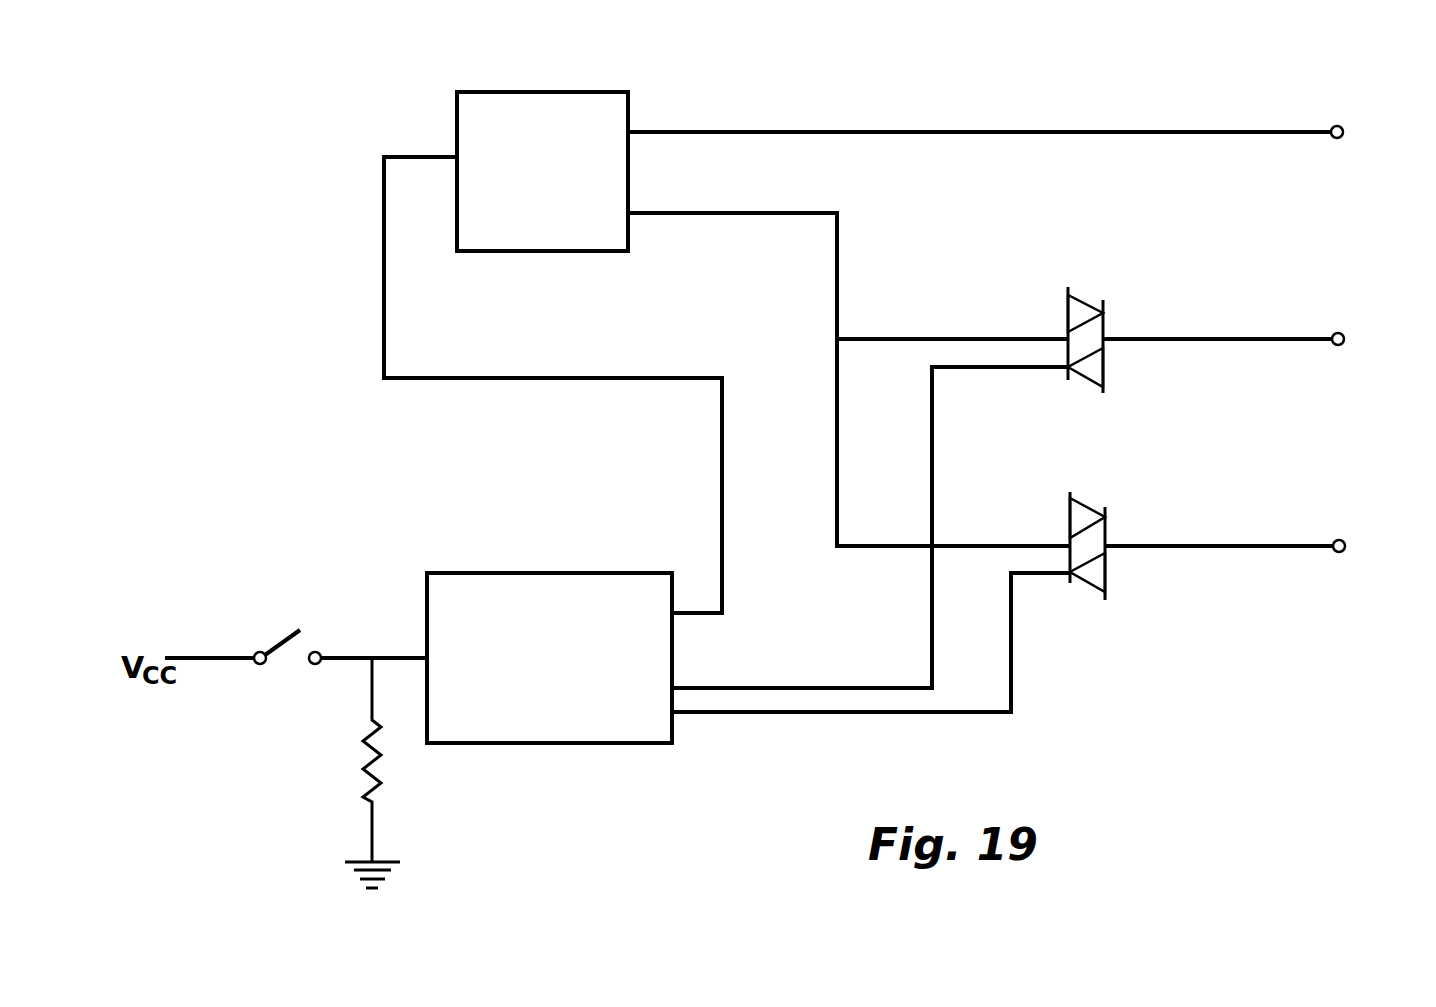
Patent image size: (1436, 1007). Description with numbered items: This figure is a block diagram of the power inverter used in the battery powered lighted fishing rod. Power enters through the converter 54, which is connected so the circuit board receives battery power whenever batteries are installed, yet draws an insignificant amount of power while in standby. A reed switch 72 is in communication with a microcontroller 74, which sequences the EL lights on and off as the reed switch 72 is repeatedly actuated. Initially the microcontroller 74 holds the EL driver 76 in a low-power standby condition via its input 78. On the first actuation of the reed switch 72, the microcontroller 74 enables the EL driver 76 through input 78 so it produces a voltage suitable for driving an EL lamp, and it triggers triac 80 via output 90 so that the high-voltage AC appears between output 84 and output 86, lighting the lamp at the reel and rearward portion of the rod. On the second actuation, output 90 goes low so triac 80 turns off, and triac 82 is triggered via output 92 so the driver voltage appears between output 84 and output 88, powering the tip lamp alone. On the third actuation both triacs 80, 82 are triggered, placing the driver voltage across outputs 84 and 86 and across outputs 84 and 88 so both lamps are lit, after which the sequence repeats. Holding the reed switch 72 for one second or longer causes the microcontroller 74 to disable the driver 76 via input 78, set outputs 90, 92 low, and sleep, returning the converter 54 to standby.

The converter 54 is at (992, 116).
The reed switch 72 is at (287, 630).
The microcontroller 74 is at (562, 572).
The EL driver 76 is at (457, 98).
The input 78 is at (457, 153).
The triac 80 is at (1103, 312).
The triac 82 is at (1105, 517).
The output 84 is at (1337, 125).
The output 86 is at (1338, 332).
The output 88 is at (1339, 539).
The output 90 is at (687, 683).
The output 92 is at (685, 717).